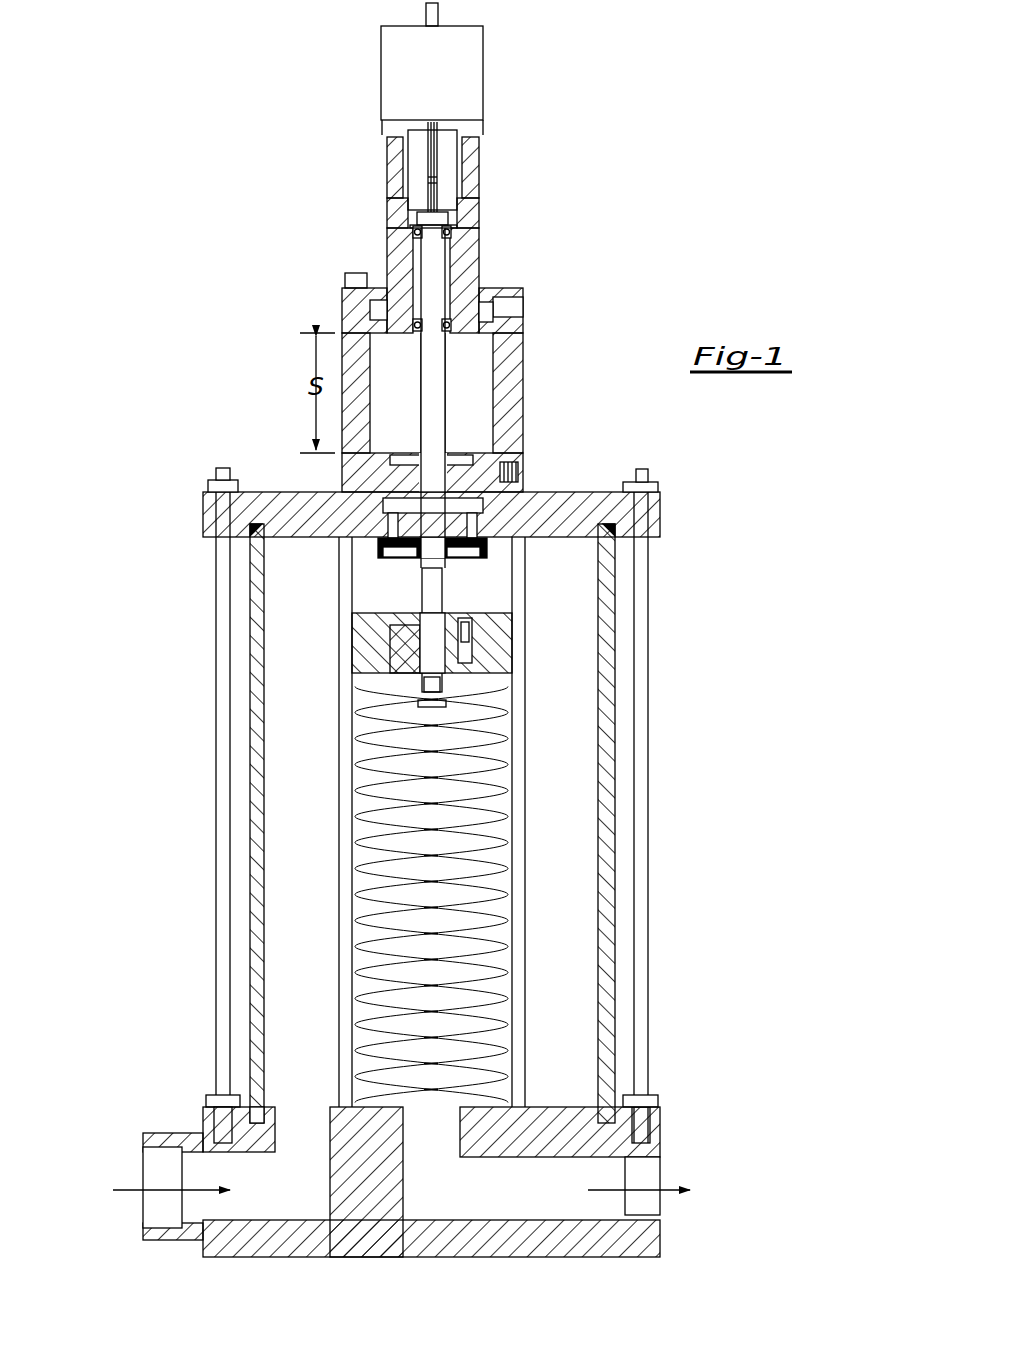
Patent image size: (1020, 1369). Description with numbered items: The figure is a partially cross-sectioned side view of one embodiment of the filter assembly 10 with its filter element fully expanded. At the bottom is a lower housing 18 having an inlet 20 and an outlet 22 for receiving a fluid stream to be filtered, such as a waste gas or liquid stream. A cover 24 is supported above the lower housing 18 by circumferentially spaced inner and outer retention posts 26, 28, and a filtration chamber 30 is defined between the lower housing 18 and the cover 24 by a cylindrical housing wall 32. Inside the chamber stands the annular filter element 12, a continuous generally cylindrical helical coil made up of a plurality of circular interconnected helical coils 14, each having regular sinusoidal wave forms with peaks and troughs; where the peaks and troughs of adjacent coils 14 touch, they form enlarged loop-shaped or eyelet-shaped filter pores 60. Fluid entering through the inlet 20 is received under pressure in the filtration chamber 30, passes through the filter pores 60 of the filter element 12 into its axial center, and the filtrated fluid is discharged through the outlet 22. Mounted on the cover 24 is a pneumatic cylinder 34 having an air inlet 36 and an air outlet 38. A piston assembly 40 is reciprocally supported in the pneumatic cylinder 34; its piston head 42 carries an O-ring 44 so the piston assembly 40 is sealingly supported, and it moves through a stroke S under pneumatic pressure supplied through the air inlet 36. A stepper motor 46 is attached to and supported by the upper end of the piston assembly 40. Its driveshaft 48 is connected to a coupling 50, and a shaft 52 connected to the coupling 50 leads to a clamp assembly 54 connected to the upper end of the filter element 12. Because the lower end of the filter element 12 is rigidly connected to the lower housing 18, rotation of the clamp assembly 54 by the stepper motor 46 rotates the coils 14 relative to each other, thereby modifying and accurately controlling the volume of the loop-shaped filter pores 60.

The filter assembly 10 is at (651, 113).
The annular filter element 12 is at (508, 828).
The helical coils 14 is at (500, 890).
The lower housing 18 is at (330, 1250).
The inlet 20 is at (160, 1163).
The outlet 22 is at (648, 1175).
The cover 24 is at (590, 492).
The inner retention posts 26 is at (523, 748).
The outer retention posts 28 is at (650, 612).
The filtration chamber 30 is at (295, 918).
The cylindrical housing wall 32 is at (260, 592).
The pneumatic cylinder 34 is at (523, 400).
The air inlet 36 is at (520, 305).
The air outlet 38 is at (515, 472).
The piston assembly 40 is at (392, 213).
The piston head 42 is at (372, 310).
The O-ring 44 is at (498, 322).
The stepper motor 46 is at (483, 66).
The driveshaft 48 is at (437, 150).
The coupling 50 is at (418, 178).
The shaft 52 is at (443, 600).
The clamp assembly 54 is at (362, 632).
The loop-shaped filter pores 60 is at (378, 757).